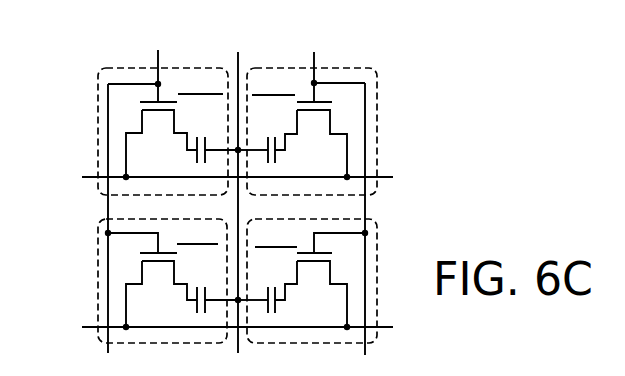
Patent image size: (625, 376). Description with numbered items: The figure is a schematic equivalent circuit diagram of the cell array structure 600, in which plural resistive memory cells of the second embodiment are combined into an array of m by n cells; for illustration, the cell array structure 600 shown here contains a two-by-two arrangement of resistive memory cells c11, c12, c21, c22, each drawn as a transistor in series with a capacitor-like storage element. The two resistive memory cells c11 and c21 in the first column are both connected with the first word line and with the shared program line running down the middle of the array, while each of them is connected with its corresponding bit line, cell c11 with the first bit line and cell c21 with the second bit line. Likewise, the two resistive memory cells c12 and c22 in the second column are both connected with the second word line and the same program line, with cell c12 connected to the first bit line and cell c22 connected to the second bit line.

The cell array structure 600 is at (108, 58).
The resistive memory cell c11 is at (182, 123).
The resistive memory cell c12 is at (292, 123).
The resistive memory cell c21 is at (173, 273).
The resistive memory cell c22 is at (301, 274).